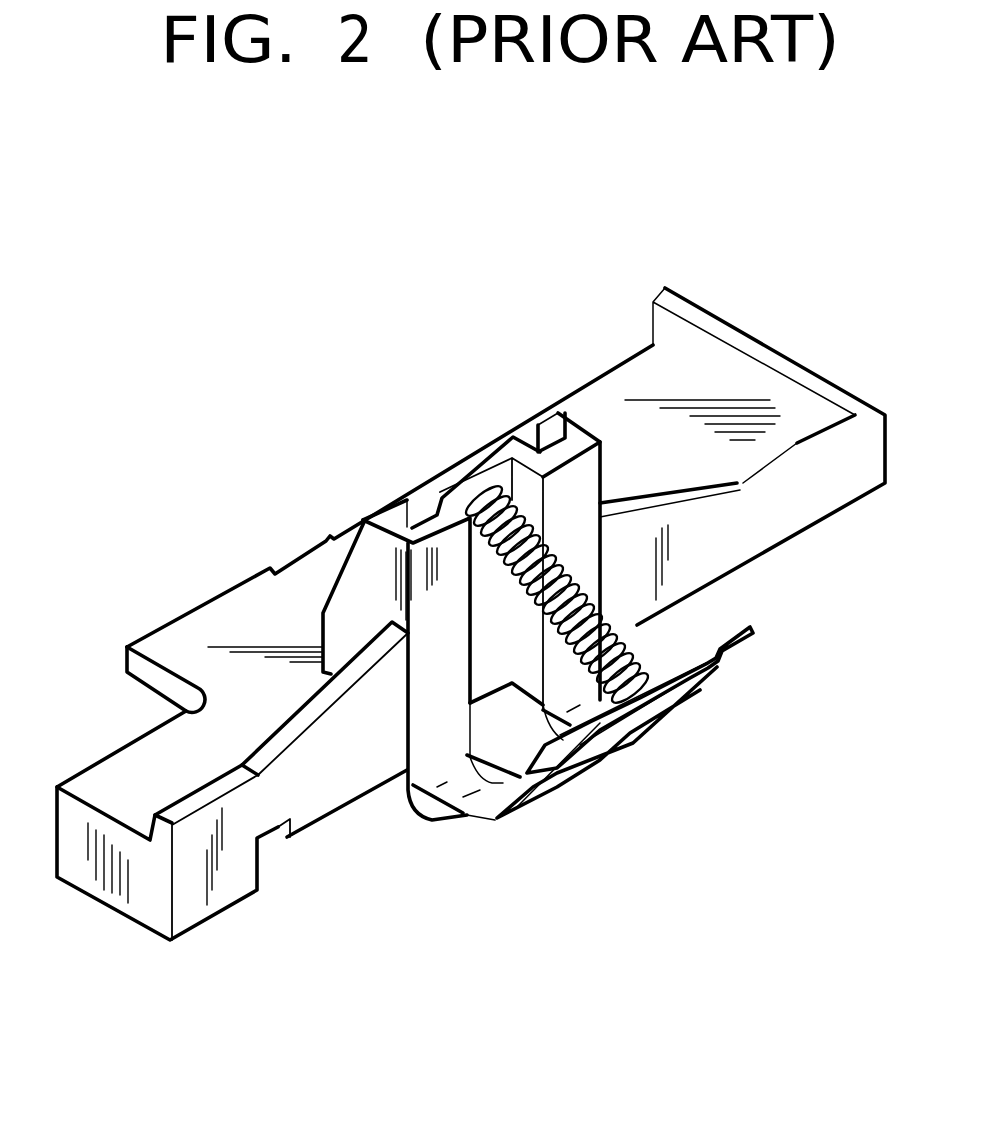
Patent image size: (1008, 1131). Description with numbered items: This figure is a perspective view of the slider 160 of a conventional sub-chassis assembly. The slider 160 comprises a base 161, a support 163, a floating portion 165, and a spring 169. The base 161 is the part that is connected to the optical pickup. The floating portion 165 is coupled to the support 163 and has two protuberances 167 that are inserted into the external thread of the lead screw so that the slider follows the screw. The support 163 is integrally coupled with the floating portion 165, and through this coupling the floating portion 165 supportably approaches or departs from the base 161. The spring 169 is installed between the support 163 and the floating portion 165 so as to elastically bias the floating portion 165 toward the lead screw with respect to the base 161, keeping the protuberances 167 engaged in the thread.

The slider 160 is at (372, 420).
The base 161 is at (220, 617).
The support 163 is at (565, 443).
The floating portion 165 is at (737, 657).
The protuberances 167 is at (707, 685).
The spring 169 is at (650, 643).